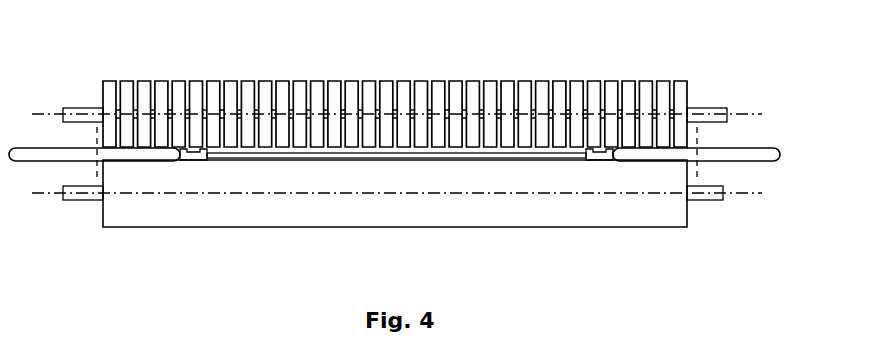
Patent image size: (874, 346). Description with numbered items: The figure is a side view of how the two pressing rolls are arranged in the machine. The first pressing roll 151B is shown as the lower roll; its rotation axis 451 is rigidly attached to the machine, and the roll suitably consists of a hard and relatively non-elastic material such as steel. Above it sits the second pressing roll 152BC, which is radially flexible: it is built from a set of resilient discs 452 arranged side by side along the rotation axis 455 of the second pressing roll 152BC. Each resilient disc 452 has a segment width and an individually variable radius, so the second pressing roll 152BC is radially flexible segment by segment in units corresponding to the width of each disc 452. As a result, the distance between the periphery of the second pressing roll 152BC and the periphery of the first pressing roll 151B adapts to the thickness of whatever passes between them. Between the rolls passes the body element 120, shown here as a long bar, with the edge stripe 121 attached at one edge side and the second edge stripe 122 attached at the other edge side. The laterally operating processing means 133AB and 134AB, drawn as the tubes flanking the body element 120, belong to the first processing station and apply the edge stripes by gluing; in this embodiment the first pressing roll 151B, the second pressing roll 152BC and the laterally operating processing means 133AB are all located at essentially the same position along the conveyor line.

The resilient disc 452 is at (210, 80).
The second pressing roll 152BC is at (658, 59).
The rotation axis of the second pressing roll 455 is at (701, 107).
The laterally operating processing means 134AB is at (725, 155).
The laterally operating processing means 133AB is at (32, 155).
The second edge stripe 122 is at (197, 150).
The edge stripe 121 is at (592, 157).
The body element 120 is at (335, 153).
The first pressing roll 151B is at (492, 227).
The rotation axis of the first pressing roll 451 is at (698, 200).